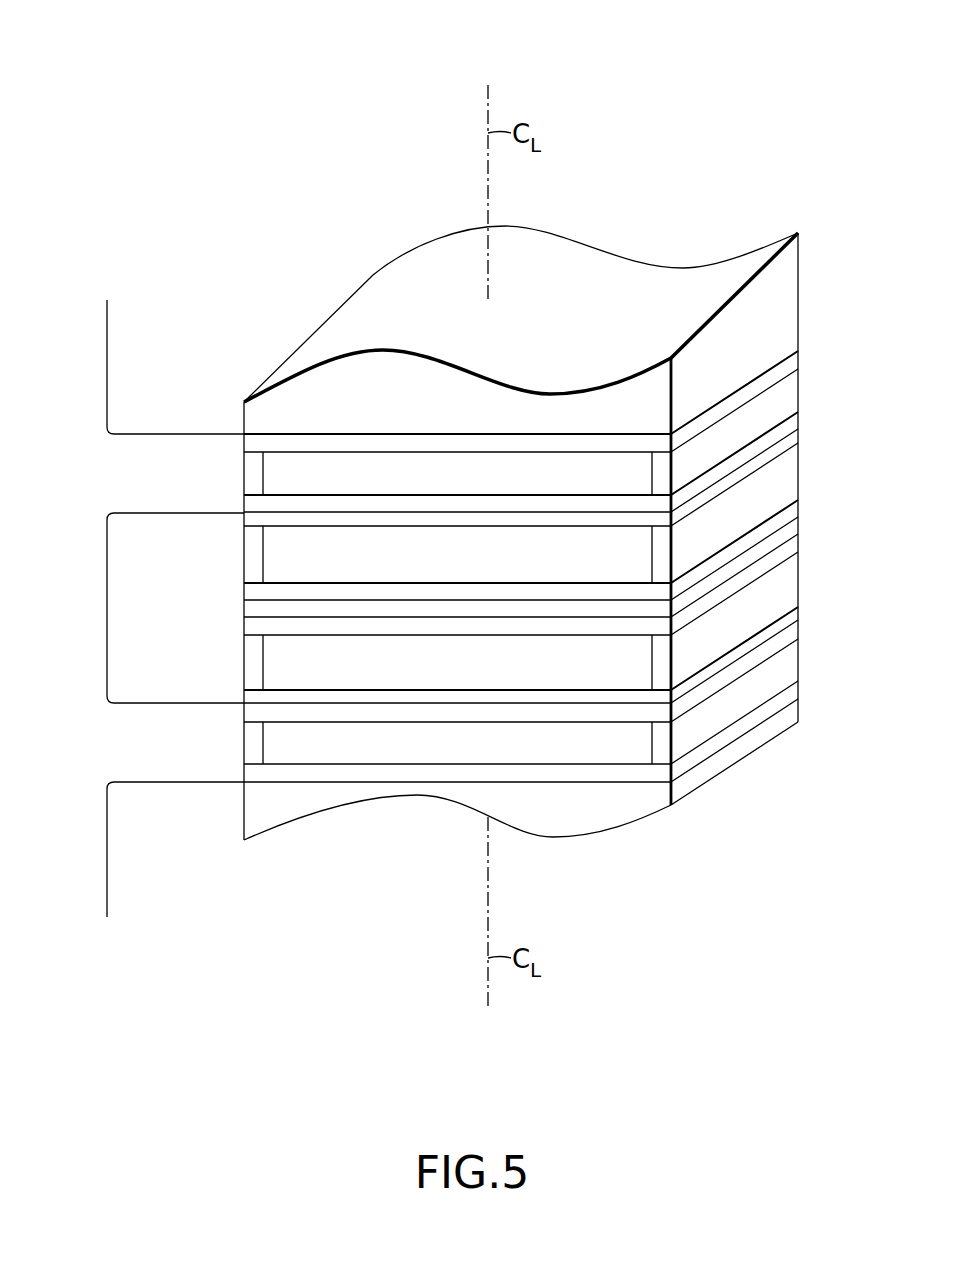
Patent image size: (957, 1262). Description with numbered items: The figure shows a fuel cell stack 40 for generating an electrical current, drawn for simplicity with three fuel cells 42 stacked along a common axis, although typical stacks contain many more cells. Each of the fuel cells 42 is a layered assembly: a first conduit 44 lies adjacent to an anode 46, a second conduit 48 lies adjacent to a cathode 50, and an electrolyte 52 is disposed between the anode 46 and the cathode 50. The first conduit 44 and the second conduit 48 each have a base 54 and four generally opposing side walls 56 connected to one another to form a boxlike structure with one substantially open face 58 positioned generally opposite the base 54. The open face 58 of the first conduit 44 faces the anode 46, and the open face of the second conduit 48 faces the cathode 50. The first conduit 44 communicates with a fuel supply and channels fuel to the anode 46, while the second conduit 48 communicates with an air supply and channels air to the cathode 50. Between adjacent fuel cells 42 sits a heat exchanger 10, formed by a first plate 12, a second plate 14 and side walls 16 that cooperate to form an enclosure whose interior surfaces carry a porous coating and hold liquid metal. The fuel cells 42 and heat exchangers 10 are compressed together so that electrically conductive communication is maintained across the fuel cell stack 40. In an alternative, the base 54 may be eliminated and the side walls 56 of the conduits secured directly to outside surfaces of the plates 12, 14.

The heat exchanger 10 is at (228, 468).
The first plate 12 is at (788, 363).
The second plate 14 is at (790, 428).
The side walls 16 is at (782, 395).
The fuel cell stack 40 is at (836, 110).
The fuel cells 42 is at (107, 386).
The first conduit 44 is at (305, 553).
The anode 46 is at (258, 590).
The second conduit 48 is at (295, 675).
The cathode 50 is at (256, 626).
The electrolyte 52 is at (256, 604).
The base 54 is at (253, 523).
The side walls 56 is at (255, 540).
The substantially open face 58 is at (474, 570).